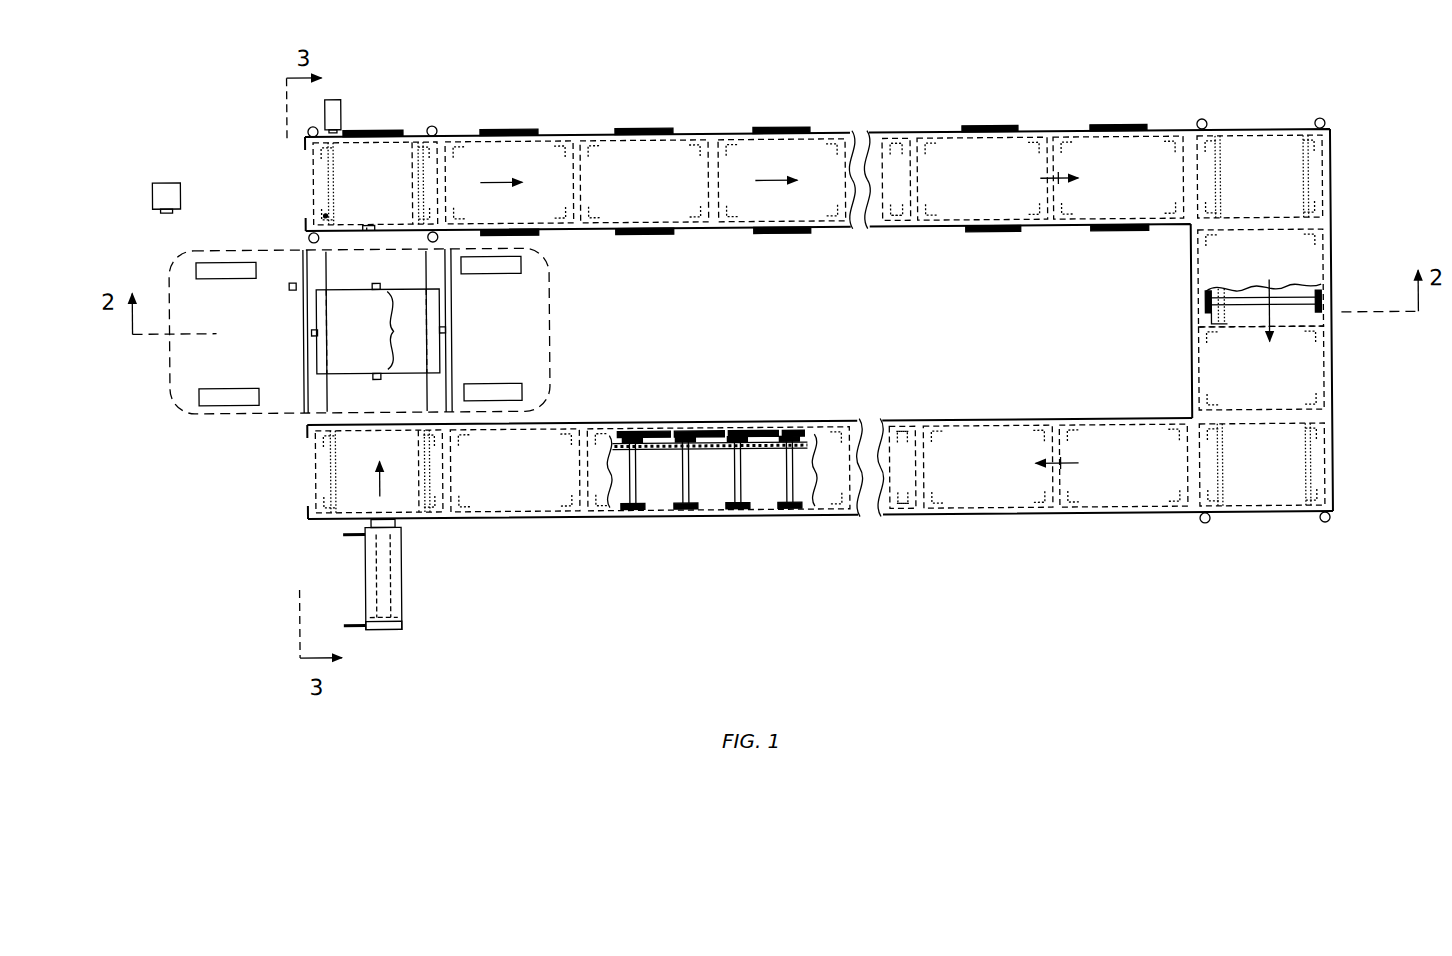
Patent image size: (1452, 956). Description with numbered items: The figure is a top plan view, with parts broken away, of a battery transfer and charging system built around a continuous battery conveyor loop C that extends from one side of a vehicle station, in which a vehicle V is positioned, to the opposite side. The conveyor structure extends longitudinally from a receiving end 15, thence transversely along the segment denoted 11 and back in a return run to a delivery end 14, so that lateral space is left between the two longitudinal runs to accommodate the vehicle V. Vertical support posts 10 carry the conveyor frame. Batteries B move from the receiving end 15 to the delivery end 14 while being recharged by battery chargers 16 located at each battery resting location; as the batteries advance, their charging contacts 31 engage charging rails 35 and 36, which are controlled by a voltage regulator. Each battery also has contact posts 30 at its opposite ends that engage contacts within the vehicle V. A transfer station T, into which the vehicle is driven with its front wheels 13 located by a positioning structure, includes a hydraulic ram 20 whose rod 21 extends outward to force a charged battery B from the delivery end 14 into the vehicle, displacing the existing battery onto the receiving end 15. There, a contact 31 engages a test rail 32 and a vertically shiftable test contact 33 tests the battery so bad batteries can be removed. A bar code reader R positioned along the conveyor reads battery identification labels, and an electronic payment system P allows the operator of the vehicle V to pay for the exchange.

The vertical support posts 10 is at (310, 128).
The frame structure 11 is at (1178, 306).
The front wheels 13 is at (505, 272).
The delivery end 14 is at (296, 499).
The receiving end 15 is at (290, 180).
The battery chargers 16 is at (1100, 238).
The hydraulic ram 20 is at (400, 573).
The rod 21 is at (372, 558).
The contact posts 30 is at (310, 333).
The charging contacts 31 is at (378, 331).
The test rail 32 is at (373, 130).
The test contact 33 is at (368, 233).
The charging rail 35 is at (772, 128).
The charging rail 36 is at (758, 237).
The battery B is at (338, 350).
The battery conveyor loop C is at (1259, 50).
The electronic payment system P is at (160, 190).
The bar code reader R is at (333, 100).
The transfer station T is at (275, 426).
The vehicle V is at (178, 252).